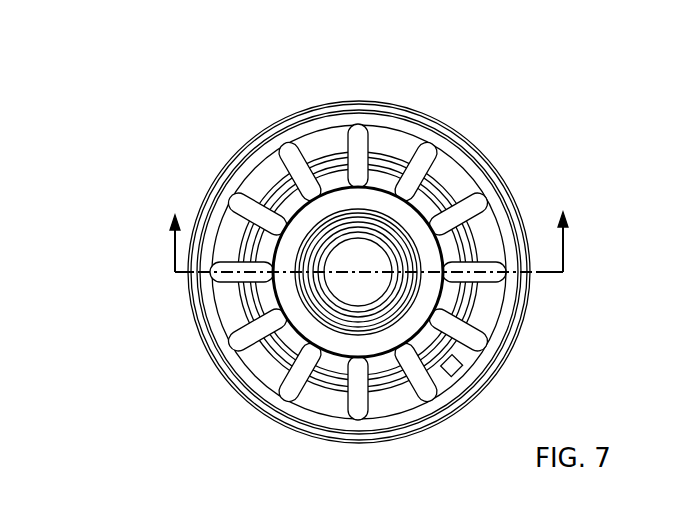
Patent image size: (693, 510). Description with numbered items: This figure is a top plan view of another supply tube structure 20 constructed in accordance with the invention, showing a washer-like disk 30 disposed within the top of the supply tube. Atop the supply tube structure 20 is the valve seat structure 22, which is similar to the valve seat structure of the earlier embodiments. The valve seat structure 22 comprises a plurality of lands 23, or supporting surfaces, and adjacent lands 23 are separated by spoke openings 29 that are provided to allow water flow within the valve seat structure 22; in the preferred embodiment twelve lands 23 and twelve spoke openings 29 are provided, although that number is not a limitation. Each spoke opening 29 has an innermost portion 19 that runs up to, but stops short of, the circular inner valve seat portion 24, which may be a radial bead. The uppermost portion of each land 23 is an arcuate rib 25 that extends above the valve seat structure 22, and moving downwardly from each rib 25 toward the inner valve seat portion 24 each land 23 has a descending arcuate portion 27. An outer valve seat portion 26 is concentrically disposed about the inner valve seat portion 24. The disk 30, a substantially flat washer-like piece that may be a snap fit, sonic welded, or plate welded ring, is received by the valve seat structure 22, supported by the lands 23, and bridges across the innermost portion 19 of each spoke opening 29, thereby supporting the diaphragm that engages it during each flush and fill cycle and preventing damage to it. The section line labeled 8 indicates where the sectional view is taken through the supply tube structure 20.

The section line 8- 8 is at (369, 225).
The innermost portion 19 is at (357, 178).
The supply tube structure 20 is at (162, 339).
The valve seat structure 22 is at (513, 335).
The lands 23 is at (259, 178).
The inner valve seat portion 24 is at (348, 232).
The arcuate rib 25 is at (388, 158).
The outer valve seat portion 26 is at (295, 422).
The descending arcuate portion 27 is at (450, 248).
The spoke openings 29 is at (358, 138).
The disk 30 is at (413, 222).